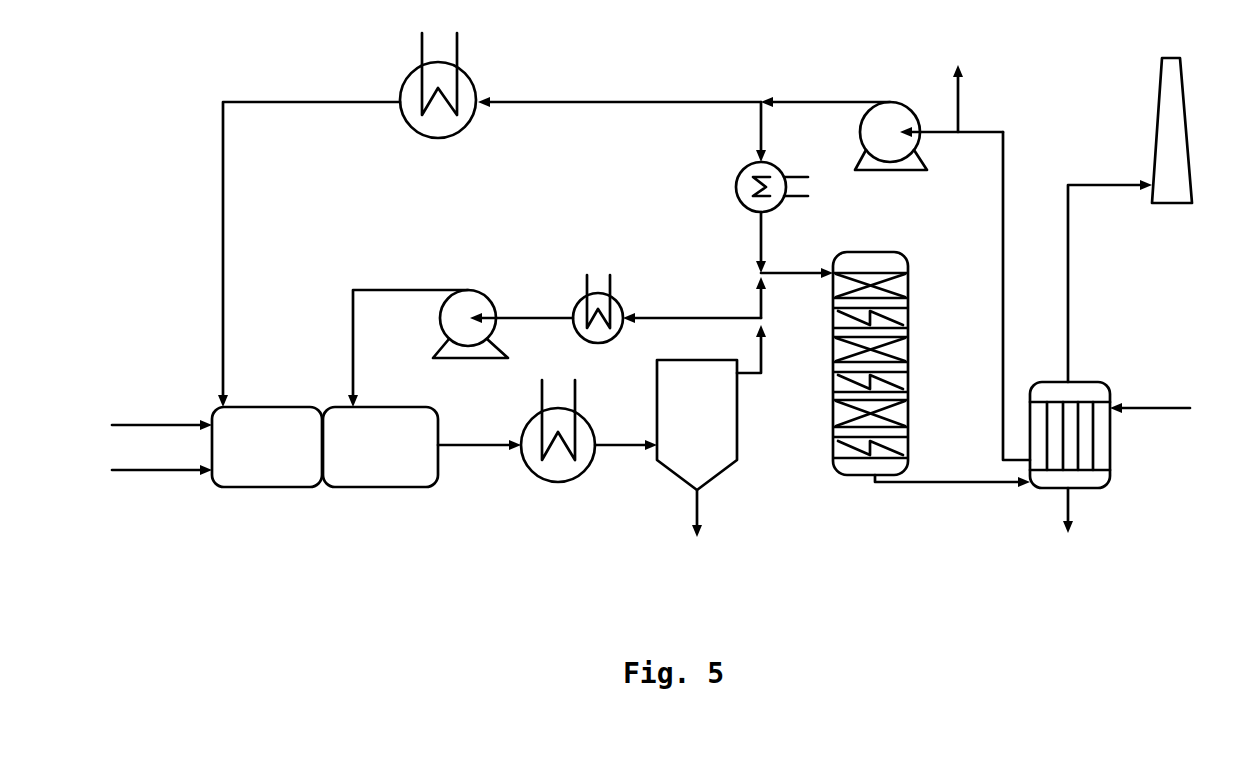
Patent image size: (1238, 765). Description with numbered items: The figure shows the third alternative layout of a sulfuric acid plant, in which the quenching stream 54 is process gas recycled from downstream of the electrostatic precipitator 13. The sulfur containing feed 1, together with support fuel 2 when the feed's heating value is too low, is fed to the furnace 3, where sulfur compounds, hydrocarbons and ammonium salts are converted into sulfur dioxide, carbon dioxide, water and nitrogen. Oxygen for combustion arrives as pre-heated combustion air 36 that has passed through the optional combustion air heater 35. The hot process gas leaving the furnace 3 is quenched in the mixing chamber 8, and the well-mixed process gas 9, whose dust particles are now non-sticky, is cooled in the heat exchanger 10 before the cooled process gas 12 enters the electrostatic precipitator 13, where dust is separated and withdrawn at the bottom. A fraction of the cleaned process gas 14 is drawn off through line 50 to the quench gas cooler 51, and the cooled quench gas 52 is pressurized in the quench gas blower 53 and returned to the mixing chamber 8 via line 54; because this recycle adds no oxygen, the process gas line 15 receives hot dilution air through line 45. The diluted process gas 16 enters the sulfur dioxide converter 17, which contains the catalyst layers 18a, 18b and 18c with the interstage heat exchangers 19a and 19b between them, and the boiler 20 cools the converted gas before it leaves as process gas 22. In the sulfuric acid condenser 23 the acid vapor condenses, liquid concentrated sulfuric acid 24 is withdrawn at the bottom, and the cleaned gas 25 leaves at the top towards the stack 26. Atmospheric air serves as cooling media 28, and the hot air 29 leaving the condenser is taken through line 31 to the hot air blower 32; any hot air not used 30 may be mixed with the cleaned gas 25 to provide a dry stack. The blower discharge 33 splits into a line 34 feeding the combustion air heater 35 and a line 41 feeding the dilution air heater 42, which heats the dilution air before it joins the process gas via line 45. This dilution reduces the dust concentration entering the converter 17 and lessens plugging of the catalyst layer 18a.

The sulfur containing feed 1 is at (162, 486).
The support fuel 2 is at (162, 409).
The furnace 3 is at (267, 447).
The mixing chamber 8 is at (380, 447).
The well-mixed process gas 9 is at (479, 465).
The heat exchanger 10 is at (558, 453).
The heated stream 12 is at (626, 467).
The electrostatic precipitator 13 is at (697, 448).
The cleaned process gas 14 is at (770, 349).
The process gas line 15 is at (781, 297).
The diluted process gas 16 is at (797, 258).
The SO2 converter 17 is at (852, 374).
The catalyst layer 18a is at (901, 289).
The heat exchanger 19a is at (901, 320).
The catalyst layer 18b is at (901, 350).
The heat exchanger 19b is at (901, 382).
The final catalyst layer 18c is at (901, 415).
The boiler 20 is at (895, 450).
The process gas 22 is at (952, 499).
The sulfuric acid condenser 23 is at (1083, 419).
The liquid concentrated H2SO4 24 is at (1092, 514).
The cleaned gas 25 is at (1110, 281).
The stack 26 is at (1152, 130).
The cooling media 28 is at (1150, 426).
The hot air 29 is at (1023, 296).
The hot air not used 30 is at (981, 89).
The recycle line 31 is at (951, 116).
The hot air blower 32 is at (891, 116).
The pump discharge line 33 is at (825, 85).
The recycle stream 34 is at (619, 87).
The combustion air heater 35 is at (438, 70).
The pre-heated combustion air line 36 is at (309, 254).
The side stream 41 is at (739, 132).
The dilution air heater 42 is at (751, 187).
The dilution air line 45 is at (741, 242).
The cooled stream 50 is at (692, 300).
The quench gas cooler 51 is at (598, 287).
The cooled quench gas 52 is at (521, 300).
The quench gas blower 53 is at (470, 303).
The quenching stream 54 is at (408, 330).